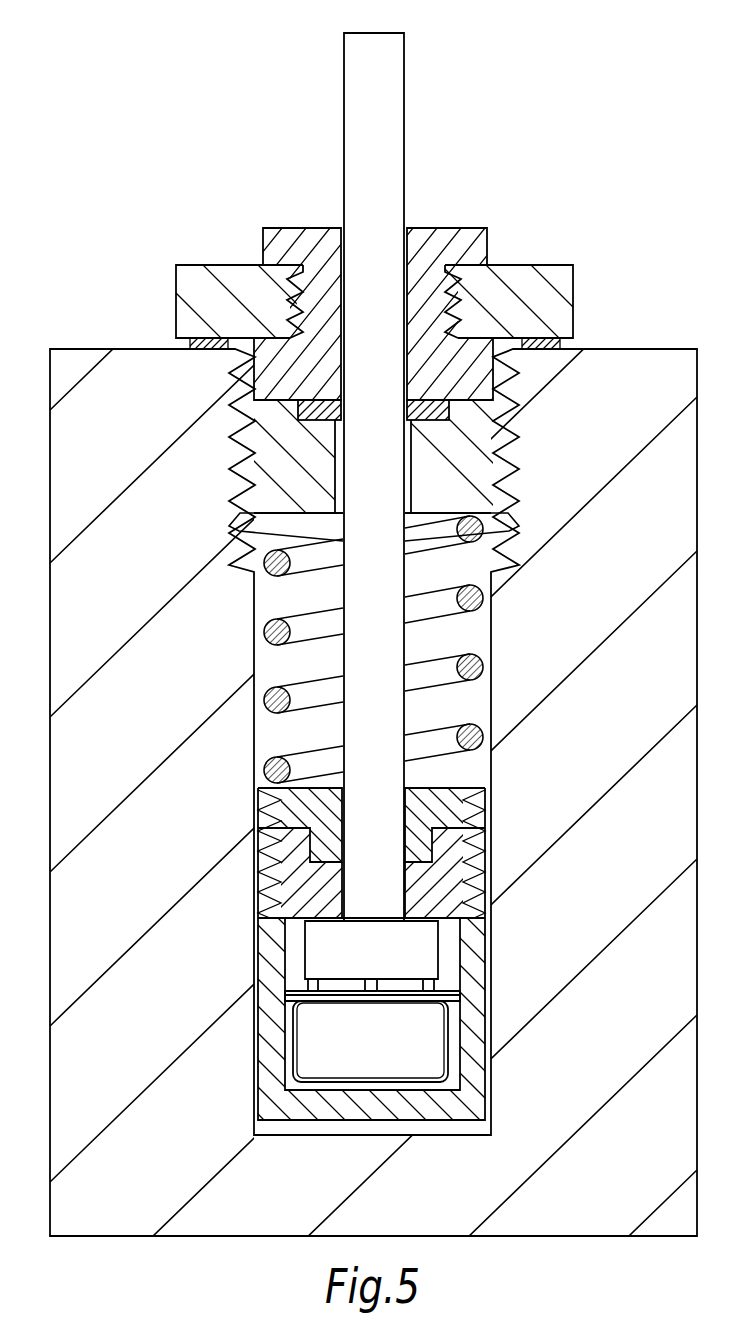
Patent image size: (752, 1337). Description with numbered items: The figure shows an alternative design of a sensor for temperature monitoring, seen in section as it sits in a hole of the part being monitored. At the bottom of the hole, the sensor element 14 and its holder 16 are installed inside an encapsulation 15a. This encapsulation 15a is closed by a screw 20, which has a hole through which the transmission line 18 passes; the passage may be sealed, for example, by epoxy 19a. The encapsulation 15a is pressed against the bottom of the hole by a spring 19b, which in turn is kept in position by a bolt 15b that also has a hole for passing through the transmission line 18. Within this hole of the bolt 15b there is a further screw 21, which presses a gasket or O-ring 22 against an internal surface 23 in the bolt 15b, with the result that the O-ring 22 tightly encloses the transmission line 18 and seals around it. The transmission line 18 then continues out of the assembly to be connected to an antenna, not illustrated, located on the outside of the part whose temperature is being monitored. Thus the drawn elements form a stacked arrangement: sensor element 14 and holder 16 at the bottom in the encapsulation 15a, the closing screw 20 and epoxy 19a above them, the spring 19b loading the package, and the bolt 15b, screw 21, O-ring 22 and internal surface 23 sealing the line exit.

The sensor element 14 is at (371, 1057).
The encapsulation 15a is at (472, 1057).
The bolt 15b is at (548, 300).
The holder 16 is at (417, 953).
The transmission line 18 is at (362, 95).
The epoxy 19a is at (455, 790).
The spring 19b is at (492, 605).
The screw 20 is at (440, 885).
The screw 21 is at (447, 241).
The O-ring 22 is at (443, 411).
The internal surface 23 is at (435, 420).